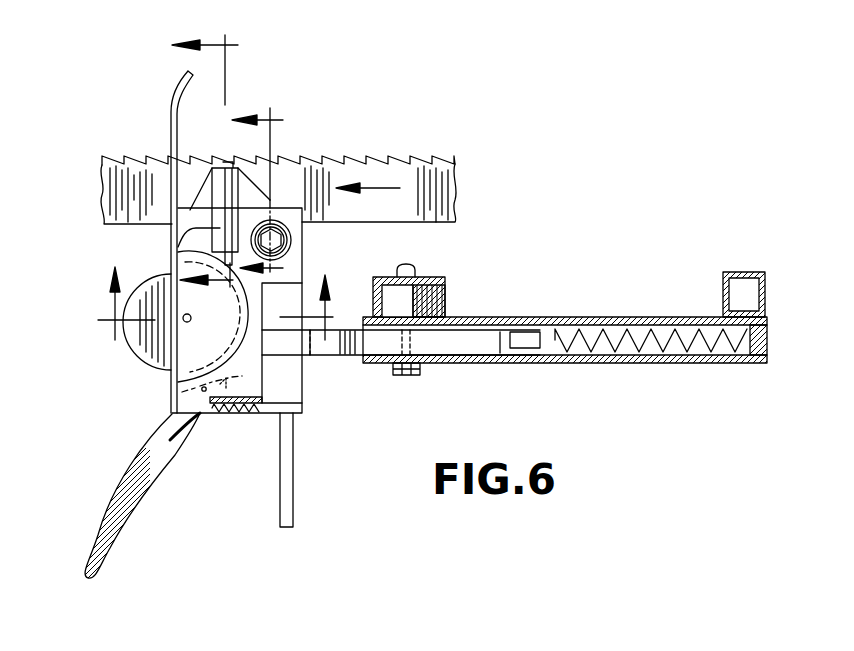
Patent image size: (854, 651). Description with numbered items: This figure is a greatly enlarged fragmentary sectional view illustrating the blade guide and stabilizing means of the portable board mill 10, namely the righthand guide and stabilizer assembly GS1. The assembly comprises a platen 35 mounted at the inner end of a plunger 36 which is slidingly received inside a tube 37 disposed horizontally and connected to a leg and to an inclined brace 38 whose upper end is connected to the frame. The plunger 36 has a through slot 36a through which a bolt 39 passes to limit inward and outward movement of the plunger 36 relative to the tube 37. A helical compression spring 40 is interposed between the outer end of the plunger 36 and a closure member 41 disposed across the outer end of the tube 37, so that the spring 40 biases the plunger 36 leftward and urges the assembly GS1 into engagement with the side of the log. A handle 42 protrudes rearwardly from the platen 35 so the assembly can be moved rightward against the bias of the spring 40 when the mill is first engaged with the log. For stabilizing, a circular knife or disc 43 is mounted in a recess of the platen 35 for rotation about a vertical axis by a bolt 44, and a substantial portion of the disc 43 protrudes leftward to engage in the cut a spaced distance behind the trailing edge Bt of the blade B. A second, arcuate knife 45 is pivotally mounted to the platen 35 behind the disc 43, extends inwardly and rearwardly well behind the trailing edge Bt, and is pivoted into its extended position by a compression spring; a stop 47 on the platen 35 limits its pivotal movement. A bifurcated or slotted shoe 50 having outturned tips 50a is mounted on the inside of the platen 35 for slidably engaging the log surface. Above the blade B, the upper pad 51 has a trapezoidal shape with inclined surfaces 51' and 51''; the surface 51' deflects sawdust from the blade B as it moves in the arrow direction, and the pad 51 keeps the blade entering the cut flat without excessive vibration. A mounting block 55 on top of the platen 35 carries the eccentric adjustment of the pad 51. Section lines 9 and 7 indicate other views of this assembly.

The blade B is at (440, 175).
The trailing edge of the blade Bt is at (425, 223).
The bifurcated or slotted shoe 50 is at (172, 375).
The outturned tips 50a is at (171, 112).
The righthand guide and stabilizer assembly GS1 is at (293, 385).
The second knife blade 45 is at (148, 450).
The disc 43 is at (146, 345).
The platen 35 is at (178, 252).
The mounting block 55 is at (188, 247).
The upper pad 51 is at (239, 196).
The inclined surface 51'' is at (202, 160).
The inclined surface 51' is at (296, 158).
The bolt 44 is at (190, 322).
The stop 47 is at (216, 413).
The plunger 36 is at (343, 328).
The through slot 36a is at (510, 366).
The tube 37 is at (627, 362).
The inclined brace 38 is at (440, 294).
The bolt 39 is at (420, 372).
The helical compression spring 40 is at (632, 327).
The closure member 41 is at (767, 345).
The handle 42 is at (290, 487).
The portable board mill 10 is at (205, 163).
The section line 9 is at (257, 192).
The section line 7 is at (218, 303).